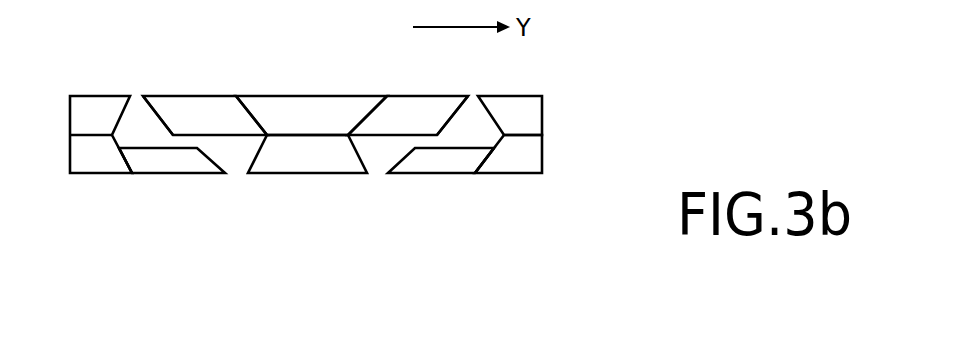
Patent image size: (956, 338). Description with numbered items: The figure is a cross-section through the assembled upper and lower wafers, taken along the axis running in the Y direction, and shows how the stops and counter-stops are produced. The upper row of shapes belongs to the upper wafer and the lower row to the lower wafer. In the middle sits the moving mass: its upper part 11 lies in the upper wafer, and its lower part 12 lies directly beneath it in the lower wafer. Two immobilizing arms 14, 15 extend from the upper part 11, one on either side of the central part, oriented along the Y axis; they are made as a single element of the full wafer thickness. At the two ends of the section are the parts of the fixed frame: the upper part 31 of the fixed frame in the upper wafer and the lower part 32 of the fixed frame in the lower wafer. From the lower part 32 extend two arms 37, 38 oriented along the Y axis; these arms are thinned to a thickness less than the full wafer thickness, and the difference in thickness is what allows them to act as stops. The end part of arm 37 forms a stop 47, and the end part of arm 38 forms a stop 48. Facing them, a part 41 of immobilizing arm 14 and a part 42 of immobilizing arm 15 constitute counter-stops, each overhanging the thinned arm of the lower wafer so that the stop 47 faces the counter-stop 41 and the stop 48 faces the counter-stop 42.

The upper part of the moving mass 11 is at (302, 110).
The lower part of the moving mass 12 is at (320, 162).
The immobilizing arm 14 is at (218, 107).
The immobilizing arm 15 is at (400, 110).
The upper part of the fixed frame 31 is at (528, 112).
The lower part of the fixed frame 32 is at (527, 162).
The arm of the lower fixed frame 37 is at (145, 162).
The arm of the lower fixed frame 38 is at (468, 162).
The counter-stop 41 is at (162, 107).
The counter-stop 42 is at (452, 110).
The stop 47 is at (193, 162).
The stop 48 is at (417, 162).